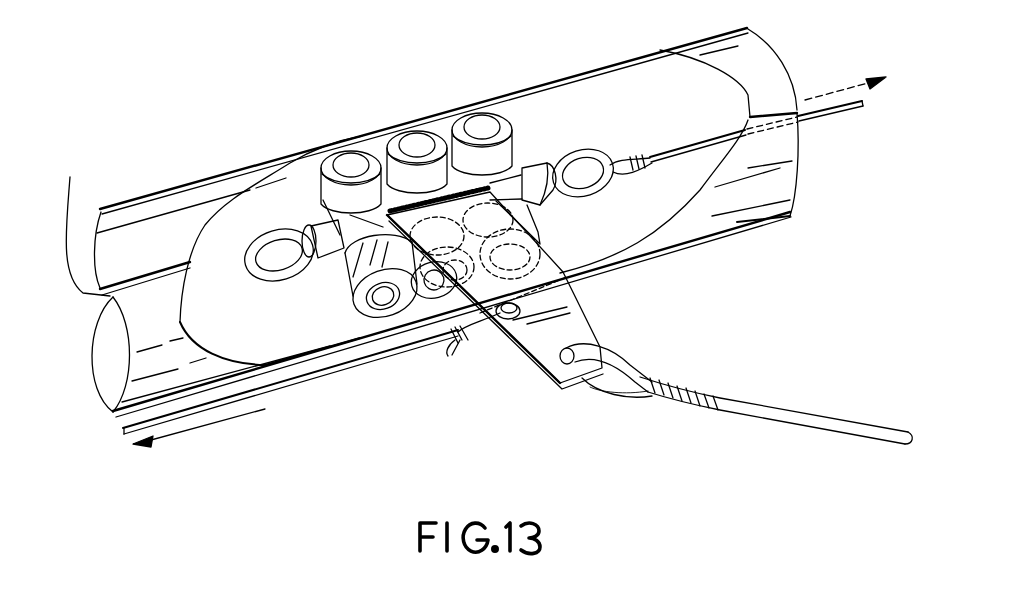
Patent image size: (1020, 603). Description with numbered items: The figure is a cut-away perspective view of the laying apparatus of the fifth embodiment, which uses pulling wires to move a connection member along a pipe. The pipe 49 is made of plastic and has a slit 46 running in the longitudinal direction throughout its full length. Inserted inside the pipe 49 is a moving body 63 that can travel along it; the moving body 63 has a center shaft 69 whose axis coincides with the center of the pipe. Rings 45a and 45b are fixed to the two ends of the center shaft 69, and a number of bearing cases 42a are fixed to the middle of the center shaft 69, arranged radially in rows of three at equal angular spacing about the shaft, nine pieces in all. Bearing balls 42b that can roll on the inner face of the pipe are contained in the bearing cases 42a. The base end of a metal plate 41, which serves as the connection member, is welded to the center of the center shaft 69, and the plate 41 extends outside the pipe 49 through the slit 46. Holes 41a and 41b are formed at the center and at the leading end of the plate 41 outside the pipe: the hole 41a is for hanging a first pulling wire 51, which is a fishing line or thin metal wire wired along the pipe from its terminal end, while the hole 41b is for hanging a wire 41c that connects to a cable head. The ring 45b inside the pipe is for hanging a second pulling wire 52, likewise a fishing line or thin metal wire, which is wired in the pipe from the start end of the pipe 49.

The plate 41 is at (587, 298).
The hole 41a is at (505, 348).
The hole 41b is at (568, 365).
The wire 41c is at (767, 403).
The bearing cases 42a is at (386, 300).
The bearing balls 42b is at (428, 300).
The ring 45a is at (270, 231).
The ring 45b is at (585, 150).
The slit 46 is at (69, 200).
The pipe 49 is at (752, 218).
The first pulling wire 51 is at (300, 382).
The second pulling wire 52 is at (828, 113).
The moving body 63 is at (434, 130).
The center shaft 69 is at (316, 224).